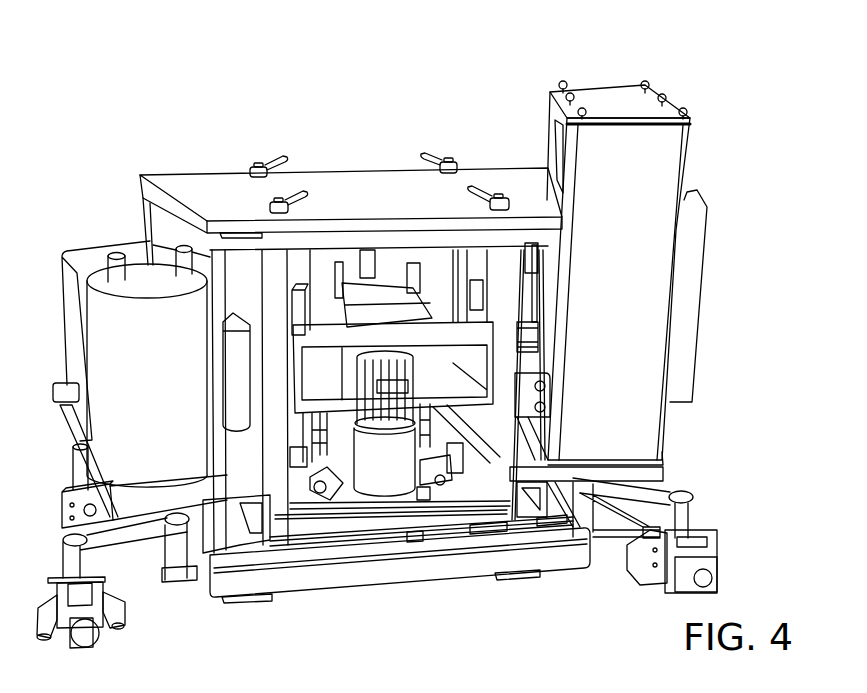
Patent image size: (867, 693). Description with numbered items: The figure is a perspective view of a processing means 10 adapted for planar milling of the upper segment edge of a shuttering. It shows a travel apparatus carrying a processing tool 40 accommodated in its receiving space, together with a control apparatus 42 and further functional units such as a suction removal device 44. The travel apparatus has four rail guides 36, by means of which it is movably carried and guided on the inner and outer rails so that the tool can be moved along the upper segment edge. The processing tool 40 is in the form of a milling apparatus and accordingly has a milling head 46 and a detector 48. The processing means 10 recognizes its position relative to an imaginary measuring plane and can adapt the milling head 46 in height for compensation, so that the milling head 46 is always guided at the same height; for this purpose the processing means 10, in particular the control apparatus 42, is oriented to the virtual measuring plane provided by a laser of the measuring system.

The processing means 10 is at (188, 136).
The rail guides 36 is at (127, 607).
The processing tool 40 is at (468, 582).
The control apparatus 42 is at (618, 108).
The suction removal device 44 is at (128, 449).
The milling head 46 is at (370, 537).
The detector 48 is at (395, 385).